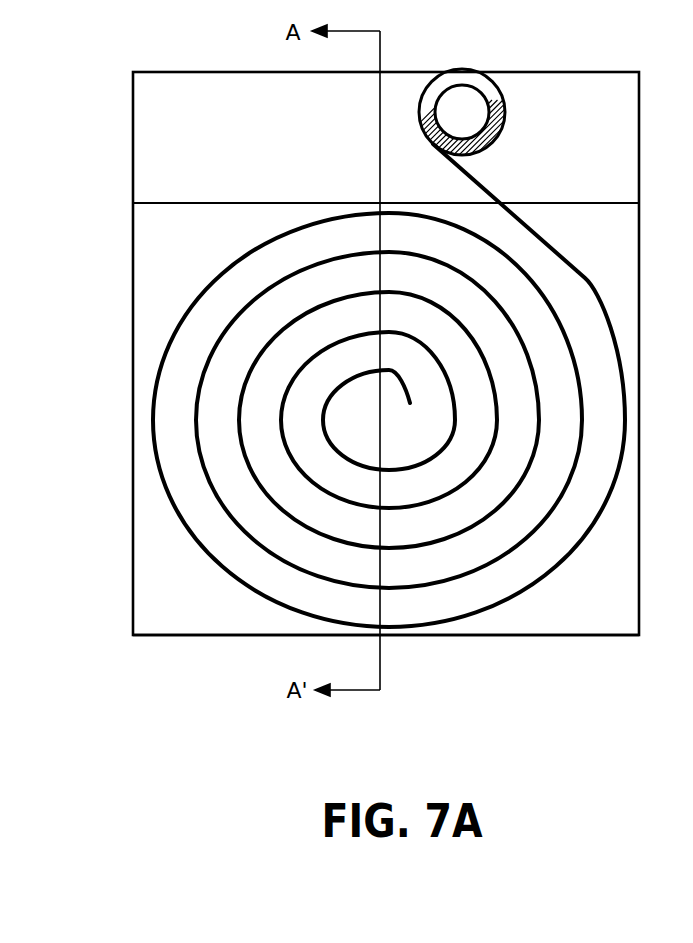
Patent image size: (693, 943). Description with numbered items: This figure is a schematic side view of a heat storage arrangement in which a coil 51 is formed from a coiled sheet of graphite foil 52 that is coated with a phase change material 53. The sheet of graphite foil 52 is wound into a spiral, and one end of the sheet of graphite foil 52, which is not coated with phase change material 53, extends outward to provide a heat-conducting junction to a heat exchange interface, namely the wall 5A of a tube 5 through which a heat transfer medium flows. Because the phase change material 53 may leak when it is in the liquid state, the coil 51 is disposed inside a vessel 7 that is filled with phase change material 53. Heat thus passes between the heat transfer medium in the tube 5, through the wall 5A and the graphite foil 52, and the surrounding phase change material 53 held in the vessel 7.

The coil 51 is at (57, 392).
The sheet of graphite foil 52 is at (610, 322).
The phase change material 53 is at (200, 614).
The vessel 7 is at (562, 637).
The tube 5 is at (460, 107).
The wall 5A is at (504, 98).